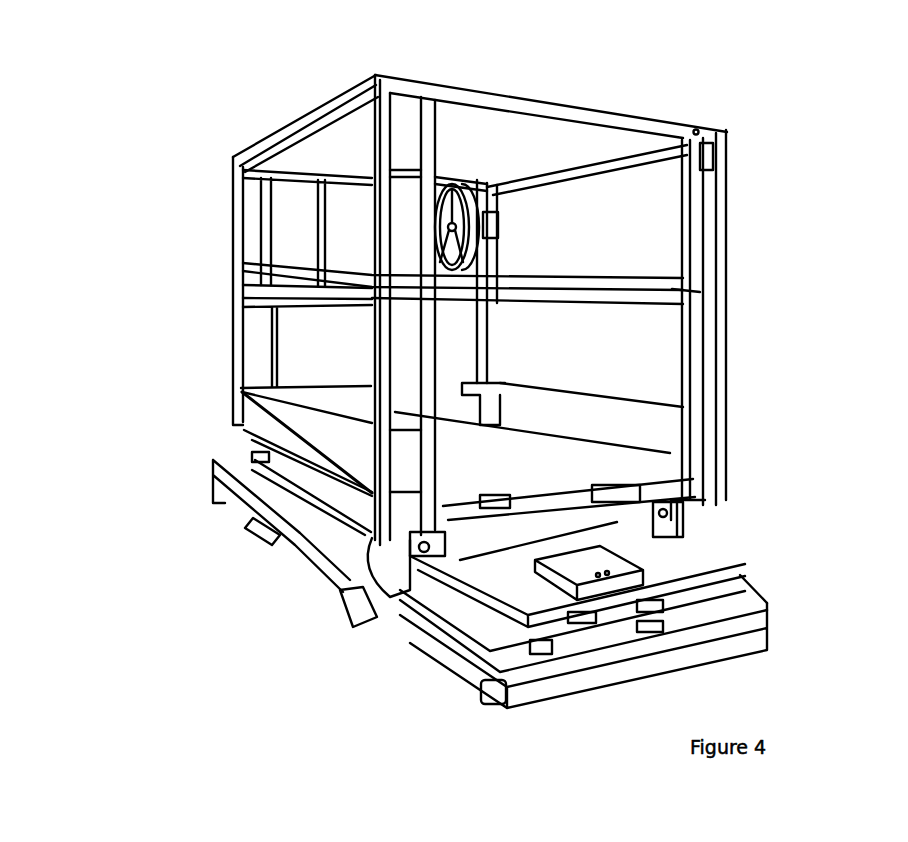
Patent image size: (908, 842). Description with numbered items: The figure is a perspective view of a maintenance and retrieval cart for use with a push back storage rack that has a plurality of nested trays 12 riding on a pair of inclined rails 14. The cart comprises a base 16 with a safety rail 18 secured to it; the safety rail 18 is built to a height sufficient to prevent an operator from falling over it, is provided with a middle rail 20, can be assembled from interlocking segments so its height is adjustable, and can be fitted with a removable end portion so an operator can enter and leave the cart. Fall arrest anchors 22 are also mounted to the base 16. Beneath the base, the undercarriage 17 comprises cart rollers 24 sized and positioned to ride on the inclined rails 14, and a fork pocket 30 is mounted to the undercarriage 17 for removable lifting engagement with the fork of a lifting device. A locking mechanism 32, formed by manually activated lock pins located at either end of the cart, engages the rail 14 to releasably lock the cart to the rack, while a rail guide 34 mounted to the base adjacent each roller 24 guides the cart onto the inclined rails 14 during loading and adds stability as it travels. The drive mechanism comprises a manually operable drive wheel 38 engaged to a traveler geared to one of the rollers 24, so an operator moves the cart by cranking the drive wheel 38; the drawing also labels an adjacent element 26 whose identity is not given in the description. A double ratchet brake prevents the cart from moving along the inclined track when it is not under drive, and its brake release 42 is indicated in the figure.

The nested trays 12 is at (765, 600).
The inclined rails 14 is at (417, 643).
The base 16 is at (530, 435).
The undercarriage 17 is at (252, 454).
The safety rail 18 is at (232, 216).
The middle rail 20 is at (240, 263).
The fall arrest anchors 22 is at (672, 289).
The cart rollers 24 is at (300, 555).
The motor 26 is at (493, 243).
The fork pocket 30 is at (485, 508).
The locking mechanism 32 is at (241, 392).
The rail guide 34 is at (267, 528).
The drive wheel 38 is at (488, 193).
The brake release 42 is at (493, 380).